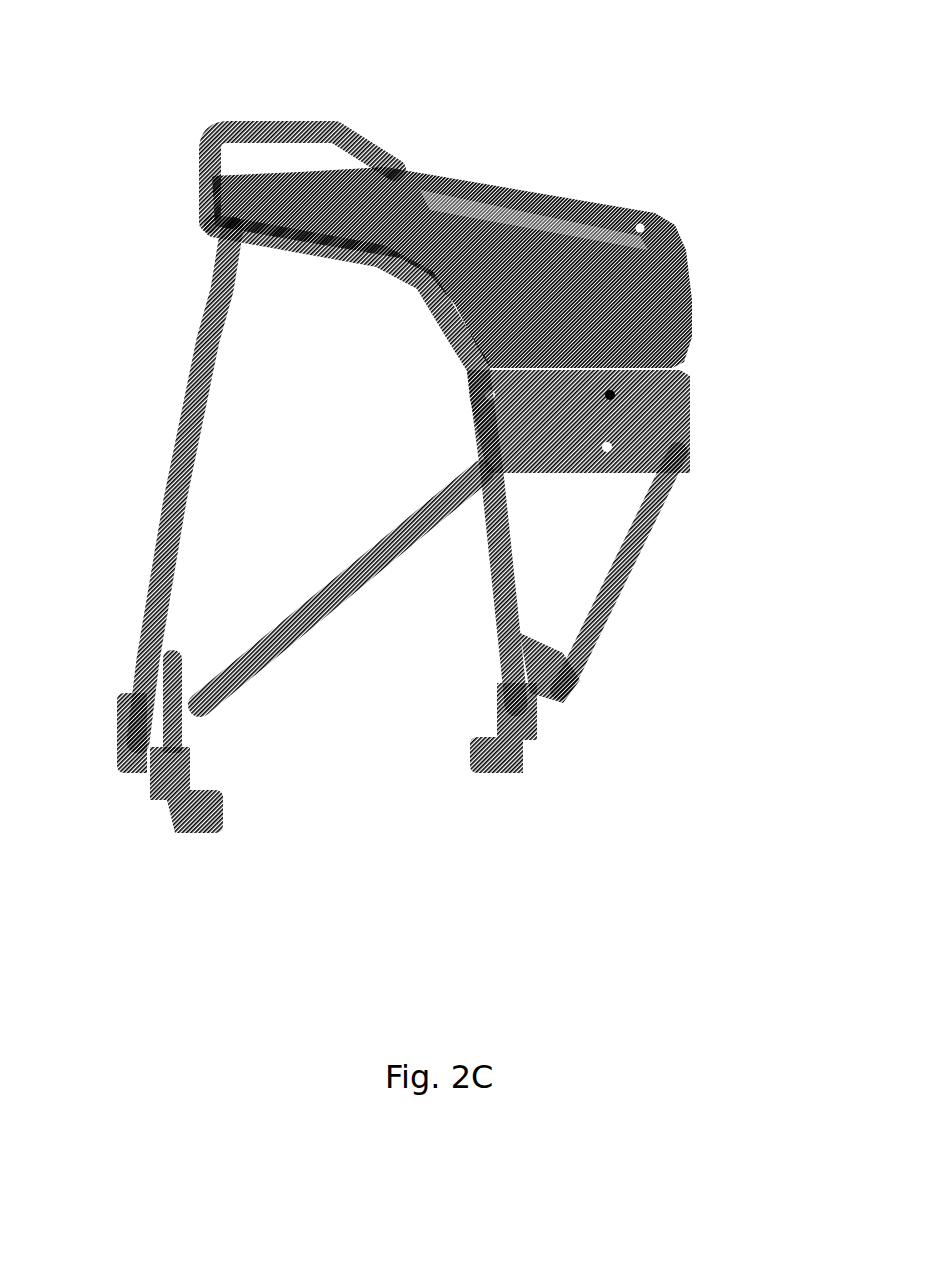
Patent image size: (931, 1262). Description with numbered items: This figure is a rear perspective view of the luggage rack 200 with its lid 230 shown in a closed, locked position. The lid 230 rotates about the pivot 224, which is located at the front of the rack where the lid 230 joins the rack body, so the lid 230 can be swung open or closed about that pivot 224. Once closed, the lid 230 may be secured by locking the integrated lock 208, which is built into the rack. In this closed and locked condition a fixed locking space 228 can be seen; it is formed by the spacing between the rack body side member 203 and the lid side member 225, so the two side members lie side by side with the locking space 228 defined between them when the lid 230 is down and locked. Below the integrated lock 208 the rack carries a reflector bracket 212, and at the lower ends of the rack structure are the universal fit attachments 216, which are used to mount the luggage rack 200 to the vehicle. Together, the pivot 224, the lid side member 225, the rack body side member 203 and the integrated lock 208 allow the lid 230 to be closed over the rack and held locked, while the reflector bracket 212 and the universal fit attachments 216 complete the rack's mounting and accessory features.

The luggage rack 200 is at (260, 233).
The rack body side member 203 is at (368, 237).
The integrated lock 208 is at (685, 268).
The reflector bracket 212 is at (690, 417).
The universal fit attachments 216 is at (120, 690).
The pivot 224 is at (203, 203).
The lid side member 225 is at (440, 223).
The fixed locking space 228 is at (393, 217).
The lid 230 is at (550, 193).